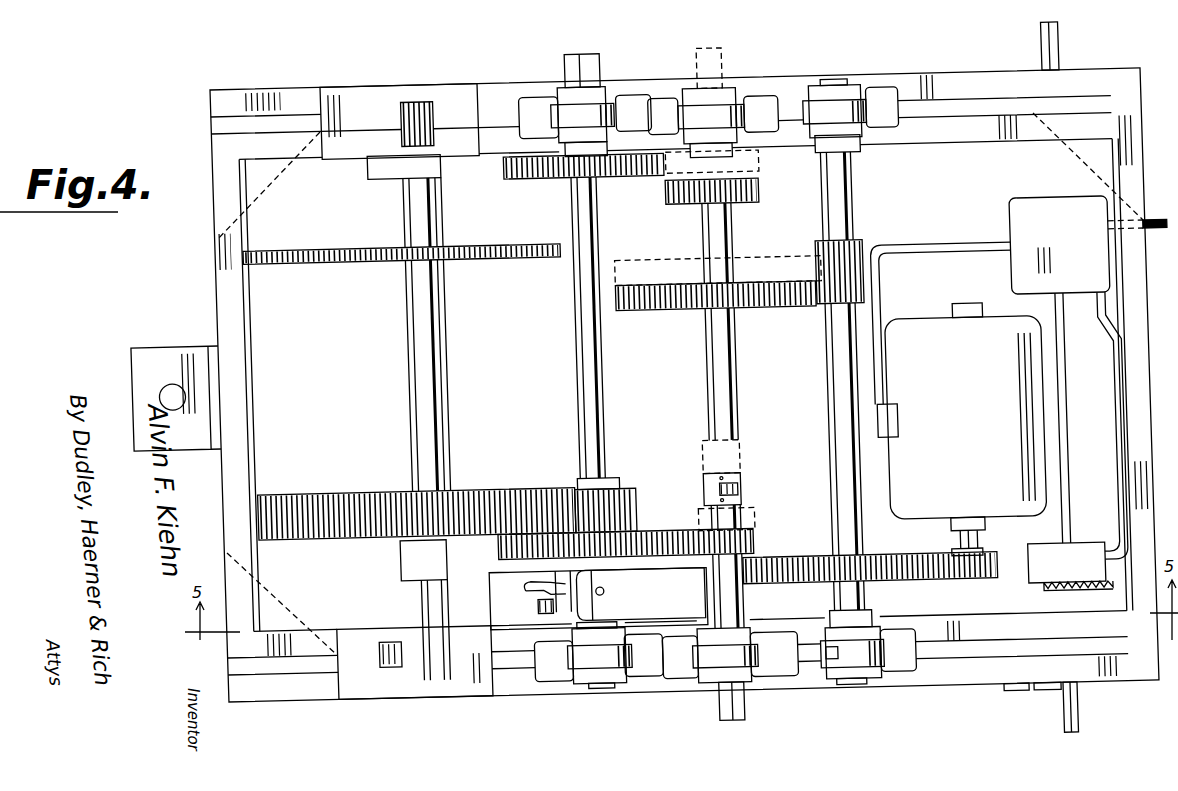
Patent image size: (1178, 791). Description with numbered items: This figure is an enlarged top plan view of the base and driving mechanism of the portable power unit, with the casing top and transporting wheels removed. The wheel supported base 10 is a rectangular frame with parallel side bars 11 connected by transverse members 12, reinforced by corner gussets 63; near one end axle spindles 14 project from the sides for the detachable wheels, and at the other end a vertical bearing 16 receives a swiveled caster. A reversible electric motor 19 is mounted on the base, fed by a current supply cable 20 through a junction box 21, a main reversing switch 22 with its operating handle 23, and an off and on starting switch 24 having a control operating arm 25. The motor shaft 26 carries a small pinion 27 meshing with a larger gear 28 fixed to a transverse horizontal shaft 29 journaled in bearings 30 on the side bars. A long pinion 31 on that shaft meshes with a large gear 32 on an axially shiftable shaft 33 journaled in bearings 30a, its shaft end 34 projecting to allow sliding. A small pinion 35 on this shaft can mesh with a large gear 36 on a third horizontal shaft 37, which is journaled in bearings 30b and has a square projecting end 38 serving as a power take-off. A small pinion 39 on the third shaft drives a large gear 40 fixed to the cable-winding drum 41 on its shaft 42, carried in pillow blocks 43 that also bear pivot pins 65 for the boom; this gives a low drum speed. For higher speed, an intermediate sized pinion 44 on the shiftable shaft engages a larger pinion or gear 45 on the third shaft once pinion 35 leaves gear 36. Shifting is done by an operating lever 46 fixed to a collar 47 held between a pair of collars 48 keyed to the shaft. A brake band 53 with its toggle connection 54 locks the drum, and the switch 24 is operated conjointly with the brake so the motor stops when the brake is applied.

The wheel supported base 10 is at (311, 75).
The side bars 11 is at (232, 98).
The transverse members 12 is at (243, 383).
The axle spindles 14 is at (1050, 36).
The vertical bearing 16 is at (163, 356).
The reversible electric motor 19 is at (960, 416).
The current supply cable 20 is at (1156, 242).
The junction box 21 is at (991, 300).
The main reversing switch 22 is at (1012, 688).
The operating handle 23 is at (1030, 690).
The off and on starting switch 24 is at (1074, 437).
The control operating arm 25 is at (1088, 600).
The motor shaft 26 is at (983, 540).
The small pinion 27 is at (957, 548).
The larger gear 28 is at (878, 553).
The transverse horizontal shaft 29 is at (850, 184).
The bearings 30 is at (836, 100).
The bearings 30a is at (720, 108).
The bearings 30b is at (605, 104).
The long pinion 31 is at (860, 240).
The large gear 32 is at (750, 300).
The slidable horizontal shaft 33 is at (733, 406).
The shaft end 34 is at (712, 80).
The small pinion 35 is at (760, 548).
The large gear 36 is at (676, 530).
The third horizontal shaft 37 is at (605, 376).
The square projecting end 38 is at (566, 62).
The small pinion 39 is at (626, 490).
The large gear 40 is at (332, 538).
The cable-winding drum 41 is at (440, 442).
The shaft 42 is at (430, 220).
The pillow blocks 43 is at (404, 92).
The intermediate sized pinion 44 is at (755, 200).
The larger pinion or gear 45 is at (620, 178).
The operating lever 46 is at (735, 485).
The collar 47 is at (740, 490).
The collars 48 is at (705, 500).
The brake band 53 is at (598, 599).
The toggle connection 54 is at (520, 590).
The corner gussets 63 is at (264, 184).
The pivot pins 65 is at (384, 650).